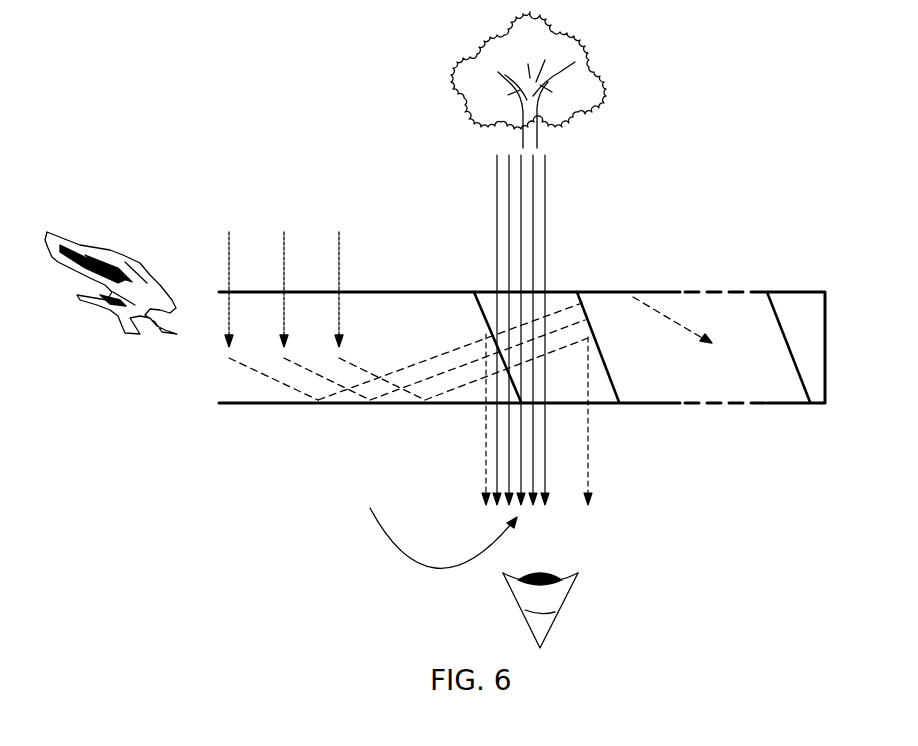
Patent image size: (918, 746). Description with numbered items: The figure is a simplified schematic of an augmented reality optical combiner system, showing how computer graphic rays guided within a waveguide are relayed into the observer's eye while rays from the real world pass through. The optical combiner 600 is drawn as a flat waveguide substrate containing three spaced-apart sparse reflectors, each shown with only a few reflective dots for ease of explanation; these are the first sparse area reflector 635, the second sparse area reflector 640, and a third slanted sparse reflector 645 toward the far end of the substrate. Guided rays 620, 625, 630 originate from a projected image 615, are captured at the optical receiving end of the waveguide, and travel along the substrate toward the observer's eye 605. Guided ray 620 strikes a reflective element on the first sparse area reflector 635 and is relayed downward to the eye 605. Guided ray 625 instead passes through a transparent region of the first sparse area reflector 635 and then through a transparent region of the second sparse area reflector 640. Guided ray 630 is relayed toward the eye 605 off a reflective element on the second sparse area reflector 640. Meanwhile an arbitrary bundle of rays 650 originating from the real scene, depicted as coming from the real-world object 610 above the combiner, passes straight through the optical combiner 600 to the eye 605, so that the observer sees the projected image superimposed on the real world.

The optical combiner 600 is at (790, 407).
The observer's eye 605 is at (560, 558).
The real-world object (tree) 610 is at (442, 108).
The projected image 615 is at (110, 242).
The guided ray 620 is at (269, 299).
The guided ray 625 is at (322, 299).
The guided ray 630 is at (377, 299).
The sparse area reflector n=1 635 is at (458, 305).
The sparse area reflector n=2 640 is at (592, 302).
The third diffractive optical element 645 is at (752, 303).
The bundle of rays 650 is at (435, 524).